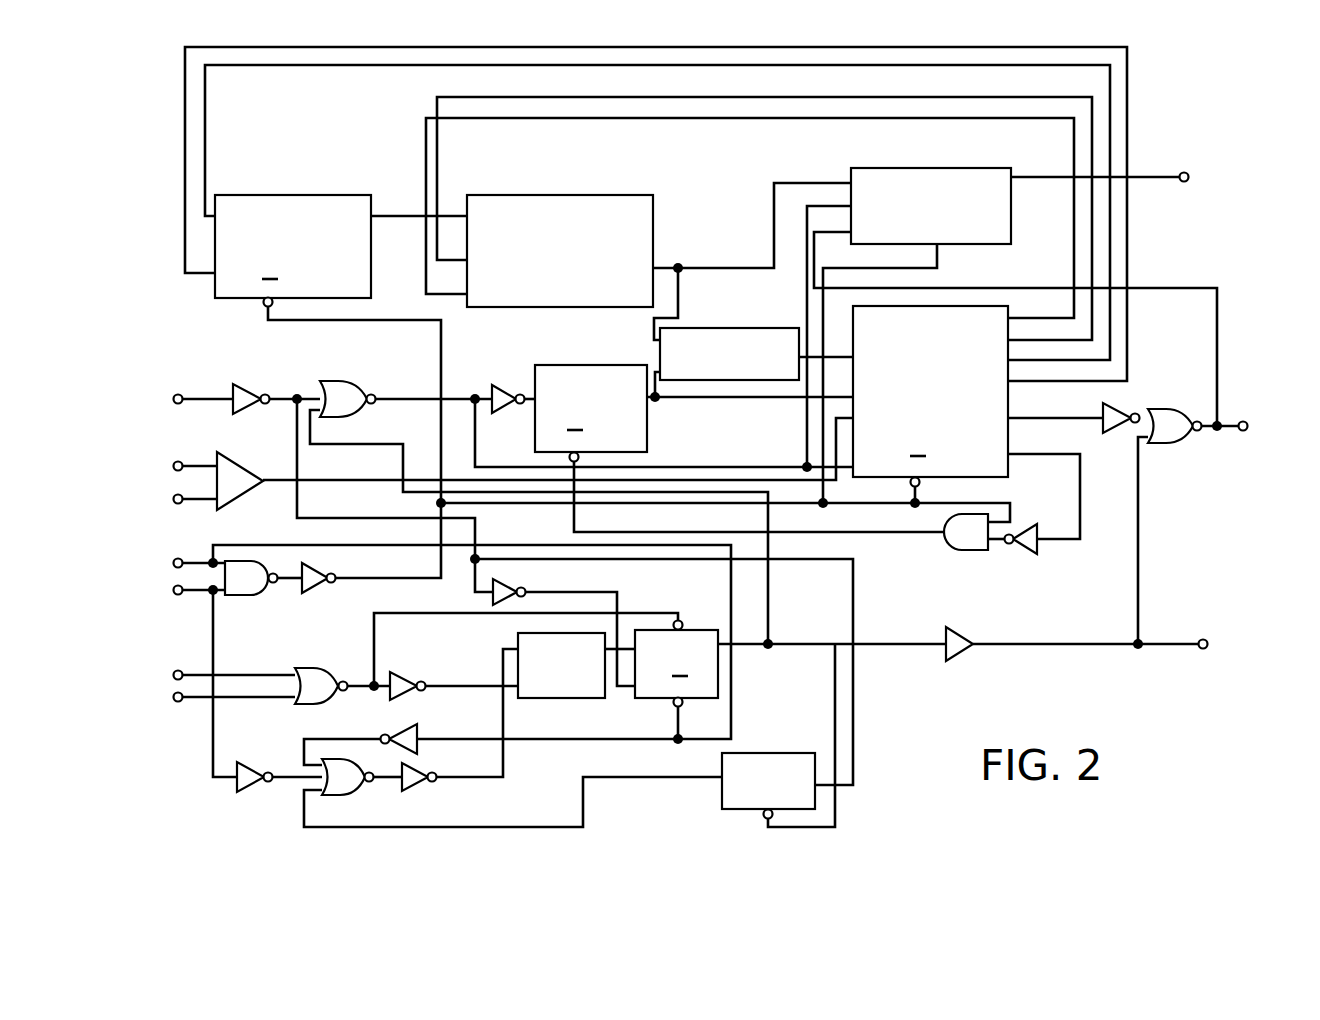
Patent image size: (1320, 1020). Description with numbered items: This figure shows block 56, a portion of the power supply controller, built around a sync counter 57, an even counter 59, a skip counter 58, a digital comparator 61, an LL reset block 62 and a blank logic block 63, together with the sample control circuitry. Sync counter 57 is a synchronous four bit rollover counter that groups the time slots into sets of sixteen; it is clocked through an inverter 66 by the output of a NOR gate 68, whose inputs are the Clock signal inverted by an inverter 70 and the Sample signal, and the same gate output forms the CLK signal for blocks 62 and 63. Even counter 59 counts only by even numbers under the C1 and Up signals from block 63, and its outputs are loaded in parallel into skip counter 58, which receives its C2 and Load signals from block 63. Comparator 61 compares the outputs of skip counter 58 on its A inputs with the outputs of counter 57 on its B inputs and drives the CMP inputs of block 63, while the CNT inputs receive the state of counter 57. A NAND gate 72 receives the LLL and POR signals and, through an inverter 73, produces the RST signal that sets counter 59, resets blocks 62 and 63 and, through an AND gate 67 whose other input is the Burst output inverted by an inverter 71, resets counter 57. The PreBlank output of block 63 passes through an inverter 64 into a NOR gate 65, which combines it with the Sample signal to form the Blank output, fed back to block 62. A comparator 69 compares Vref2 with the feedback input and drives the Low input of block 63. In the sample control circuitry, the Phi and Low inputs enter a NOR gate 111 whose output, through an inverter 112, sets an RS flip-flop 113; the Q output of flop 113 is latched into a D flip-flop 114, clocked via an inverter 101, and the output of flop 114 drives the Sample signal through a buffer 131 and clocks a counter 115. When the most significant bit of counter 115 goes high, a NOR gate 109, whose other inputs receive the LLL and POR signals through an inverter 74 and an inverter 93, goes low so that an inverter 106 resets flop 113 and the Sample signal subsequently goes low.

The block 56 is at (947, 783).
The sync counter 57 is at (648, 415).
The skip counter 58 is at (600, 195).
The even counter 59 is at (315, 195).
The digital comparator 61 is at (722, 380).
The LL reset block 62 is at (900, 168).
The blank logic block 63 is at (965, 306).
The inverter 64 is at (1112, 435).
The NOR gate 65 is at (1172, 440).
The inverter 66 is at (490, 393).
The AND gate 67 is at (962, 553).
The NOR gate 68 is at (333, 388).
The comparator 69 is at (243, 497).
The inverter 70 is at (255, 390).
The inverter 71 is at (1023, 553).
The NAND gate 72 is at (245, 598).
The inverter 73 is at (315, 592).
The inverter 74 is at (245, 765).
The inverter 93 is at (400, 728).
The inverter 101 is at (510, 590).
The inverter 106 is at (420, 790).
The NOR gate 109 is at (340, 795).
The NOR gate 111 is at (310, 670).
The inverter 112 is at (420, 700).
The RS flip-flop 113 is at (578, 700).
The D flip-flop 114 is at (714, 630).
The counter 115 is at (740, 812).
The buffer 131 is at (965, 655).